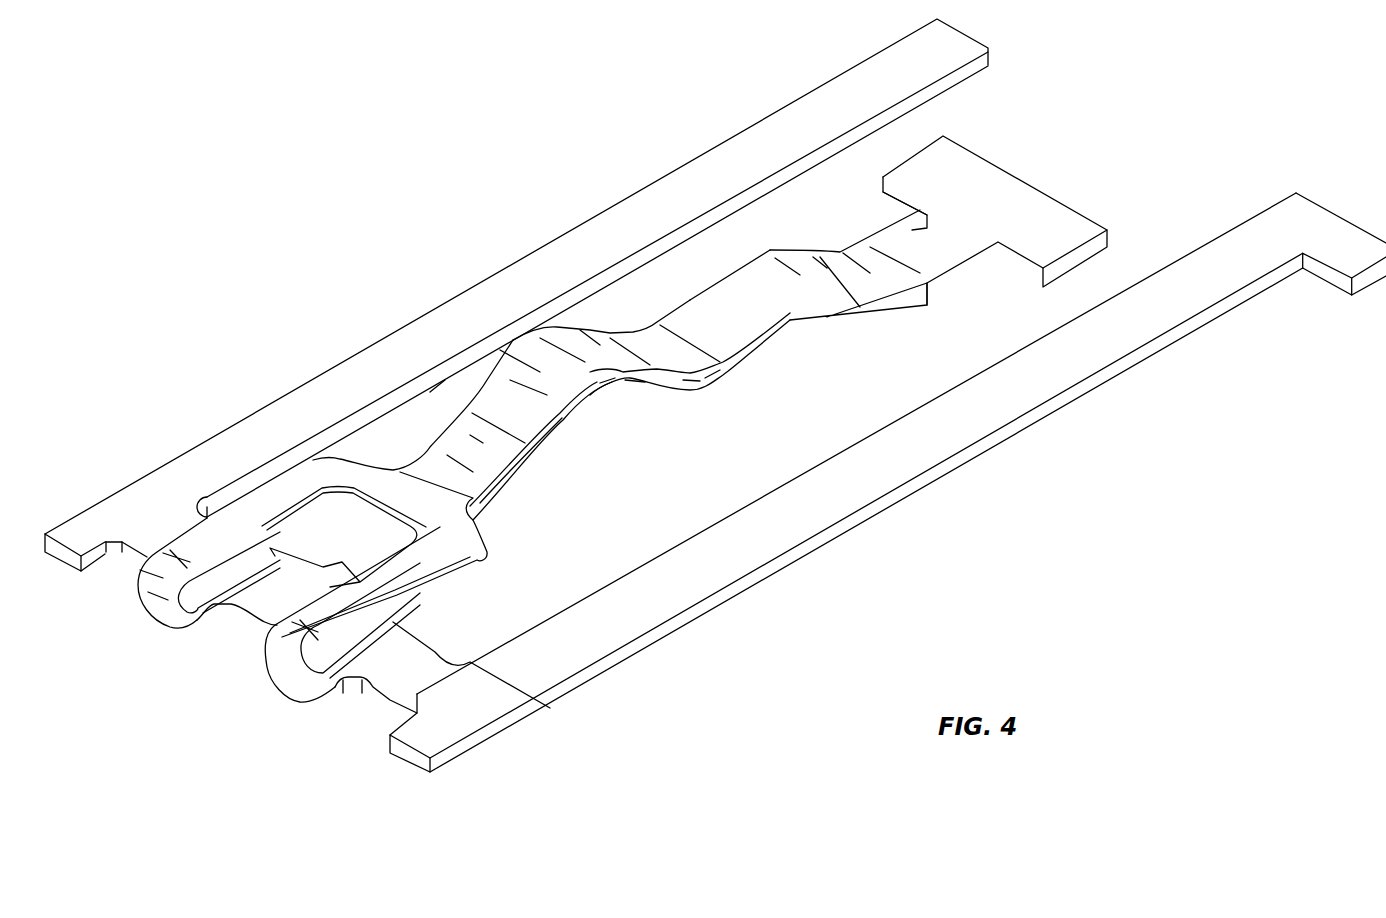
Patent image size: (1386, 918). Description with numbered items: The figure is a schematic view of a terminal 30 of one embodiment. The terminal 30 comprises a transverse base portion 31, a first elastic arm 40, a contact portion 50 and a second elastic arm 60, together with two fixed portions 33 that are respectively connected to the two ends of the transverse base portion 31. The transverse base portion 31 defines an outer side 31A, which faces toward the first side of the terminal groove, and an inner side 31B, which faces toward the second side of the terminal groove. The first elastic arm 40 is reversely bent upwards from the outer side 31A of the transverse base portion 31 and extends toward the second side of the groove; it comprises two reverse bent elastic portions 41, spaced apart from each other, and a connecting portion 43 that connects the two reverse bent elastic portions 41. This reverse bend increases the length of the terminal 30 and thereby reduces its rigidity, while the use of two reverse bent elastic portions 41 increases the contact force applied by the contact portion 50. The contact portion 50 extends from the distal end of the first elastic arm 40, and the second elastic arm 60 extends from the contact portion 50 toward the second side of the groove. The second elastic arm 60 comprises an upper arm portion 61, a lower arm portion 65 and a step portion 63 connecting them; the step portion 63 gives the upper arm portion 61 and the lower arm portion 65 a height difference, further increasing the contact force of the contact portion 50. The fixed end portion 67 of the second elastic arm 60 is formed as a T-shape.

The terminal 30 is at (356, 148).
The transverse base portion 31 is at (838, 502).
The outer side 31A is at (397, 690).
The inner side 31B is at (470, 660).
The fixed portion 33 is at (397, 330).
The first elastic arm 40 is at (344, 534).
The reverse bent elastic portion 41 is at (150, 597).
The connecting portion 43 is at (443, 525).
The contact portion 50 is at (625, 404).
The second elastic arm 60 is at (758, 295).
The upper arm portion 61 is at (723, 295).
The step portion 63 is at (833, 255).
The lower arm portion 65 is at (912, 228).
The fixed end portion 67 is at (1019, 195).